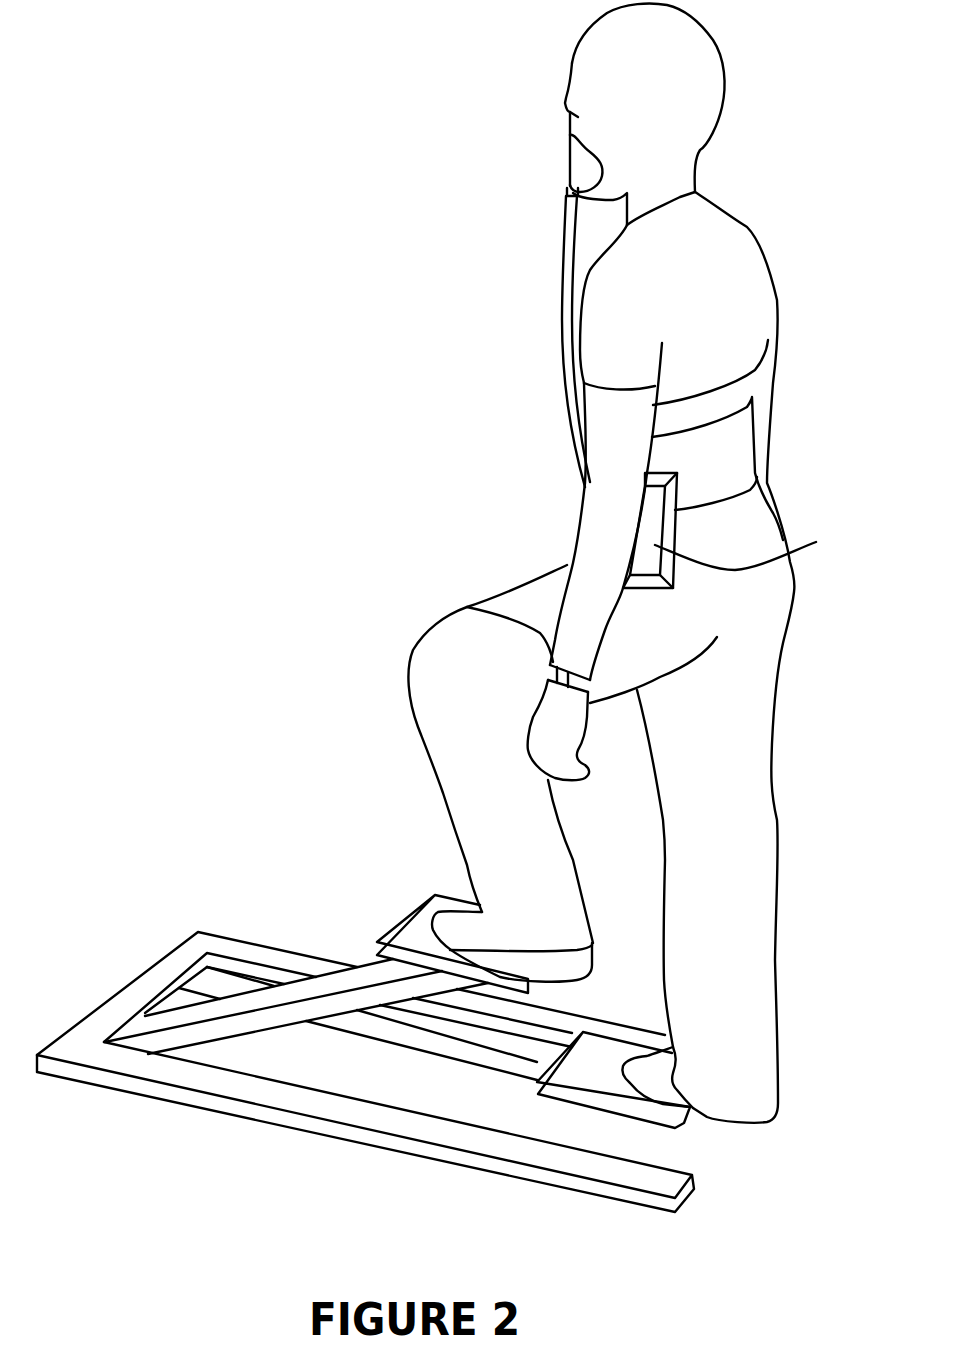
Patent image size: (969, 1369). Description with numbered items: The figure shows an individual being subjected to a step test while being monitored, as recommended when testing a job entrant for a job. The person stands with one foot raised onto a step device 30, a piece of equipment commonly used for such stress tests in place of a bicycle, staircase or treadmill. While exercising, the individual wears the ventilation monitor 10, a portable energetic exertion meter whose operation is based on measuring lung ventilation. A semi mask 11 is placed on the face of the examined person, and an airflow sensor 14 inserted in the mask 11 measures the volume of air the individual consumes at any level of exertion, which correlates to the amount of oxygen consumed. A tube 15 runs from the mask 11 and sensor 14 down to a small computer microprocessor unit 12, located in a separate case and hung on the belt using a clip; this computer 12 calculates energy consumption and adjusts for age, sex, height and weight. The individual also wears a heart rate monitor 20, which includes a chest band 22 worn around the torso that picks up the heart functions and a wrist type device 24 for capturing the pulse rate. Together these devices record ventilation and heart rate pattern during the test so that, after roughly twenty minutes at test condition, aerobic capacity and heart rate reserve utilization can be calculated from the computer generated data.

The ventilation monitor 10 is at (655, 522).
The semi mask 11 is at (575, 155).
The small computer microprocessor unit 12 is at (749, 549).
The airflow sensor 14 is at (572, 193).
The tube 15 is at (563, 275).
The heart rate monitor 20 is at (723, 408).
The chest band 22 is at (700, 410).
The wrist type device 24 is at (487, 600).
The step device 30 is at (433, 893).